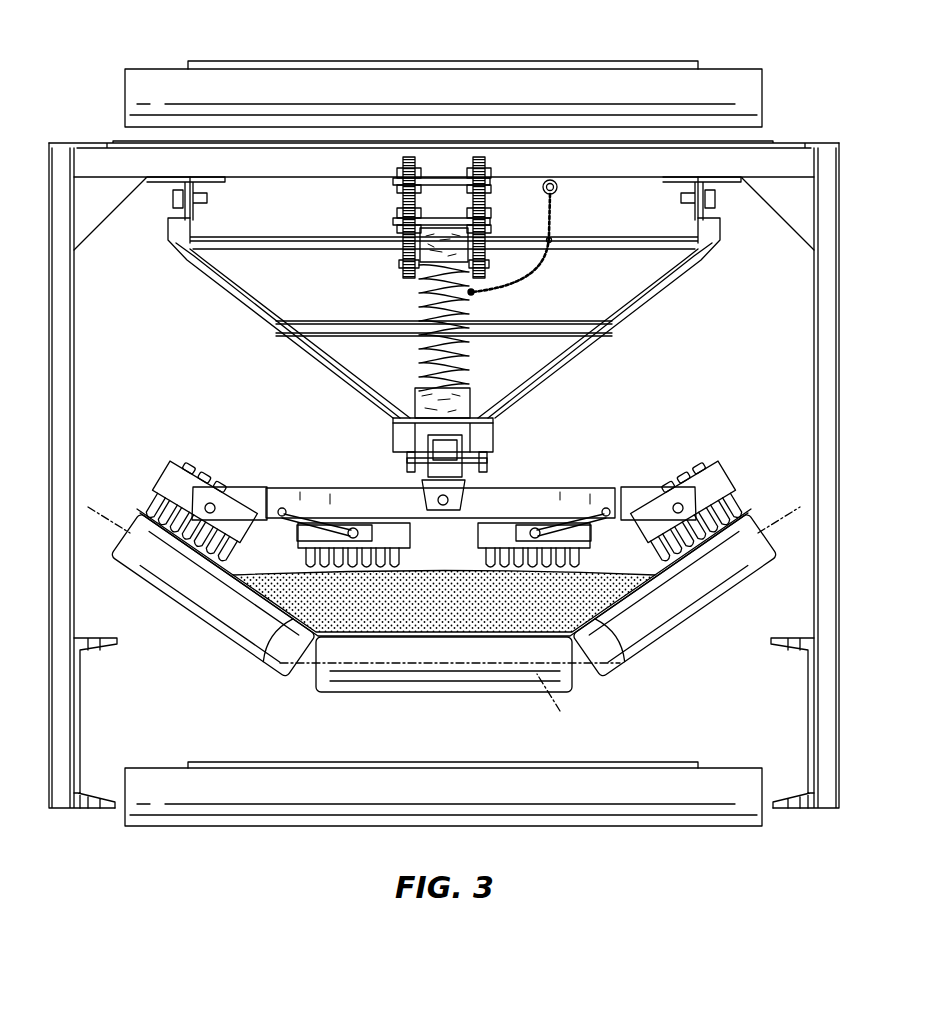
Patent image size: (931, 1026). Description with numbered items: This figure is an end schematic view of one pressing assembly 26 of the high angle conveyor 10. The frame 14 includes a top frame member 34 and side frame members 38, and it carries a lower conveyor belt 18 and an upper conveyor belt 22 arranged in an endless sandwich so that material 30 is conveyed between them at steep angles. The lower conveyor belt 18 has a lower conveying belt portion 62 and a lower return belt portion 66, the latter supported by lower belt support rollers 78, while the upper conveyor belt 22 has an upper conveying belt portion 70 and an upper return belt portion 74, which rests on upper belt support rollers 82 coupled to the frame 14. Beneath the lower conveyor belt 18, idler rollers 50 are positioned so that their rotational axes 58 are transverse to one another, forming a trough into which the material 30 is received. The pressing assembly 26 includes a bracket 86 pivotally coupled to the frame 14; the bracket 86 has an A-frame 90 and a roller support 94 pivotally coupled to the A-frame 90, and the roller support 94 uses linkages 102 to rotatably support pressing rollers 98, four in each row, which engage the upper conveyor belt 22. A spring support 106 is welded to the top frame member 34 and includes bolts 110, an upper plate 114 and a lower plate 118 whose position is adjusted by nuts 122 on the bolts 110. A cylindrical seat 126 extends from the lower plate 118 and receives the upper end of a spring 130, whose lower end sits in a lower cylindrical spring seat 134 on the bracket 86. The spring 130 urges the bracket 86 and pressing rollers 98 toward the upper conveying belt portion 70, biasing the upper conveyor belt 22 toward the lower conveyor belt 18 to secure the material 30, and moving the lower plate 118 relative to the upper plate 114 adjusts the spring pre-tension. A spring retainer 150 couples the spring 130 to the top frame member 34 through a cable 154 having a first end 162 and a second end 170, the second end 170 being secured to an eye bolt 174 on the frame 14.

The high angle conveyor 10 is at (112, 57).
The frame 14 is at (444, 451).
The lower continuous conveyor belt 18 is at (443, 674).
The upper continuous conveyor belt 22 is at (443, 358).
The pressing assembly 26 is at (668, 385).
The material 30 is at (393, 605).
The top frame member 34 is at (778, 160).
The side frame member 38 is at (64, 418).
The idler roller 50 is at (192, 605).
The rotational axis 58 is at (116, 528).
The lower conveying belt portion 62 is at (273, 607).
The lower return belt portion 66 is at (205, 762).
The upper conveying belt portion 70 is at (643, 653).
The upper return belt portion 74 is at (272, 64).
The lower belt support roller 78 is at (645, 822).
The upper belt support roller 82 is at (727, 85).
The bracket 86 is at (192, 340).
The A-frame 90 is at (237, 297).
The roller support 94 is at (540, 488).
The pressing roller 98 is at (205, 468).
The linkage 102 is at (233, 520).
The spring support 106 is at (365, 223).
The bolt 110 is at (407, 280).
The upper plate 114 is at (445, 180).
The lower plate 118 is at (400, 223).
The nut 122 is at (408, 222).
The cylindrical seat 126 is at (405, 243).
The spring 130 is at (420, 357).
The lower cylindrical spring seat 134 is at (473, 395).
The spring retainer 150 is at (589, 306).
The cable 154 is at (566, 240).
The first end 162 is at (474, 293).
The second end 170 is at (560, 203).
The eye bolt 174 is at (558, 185).